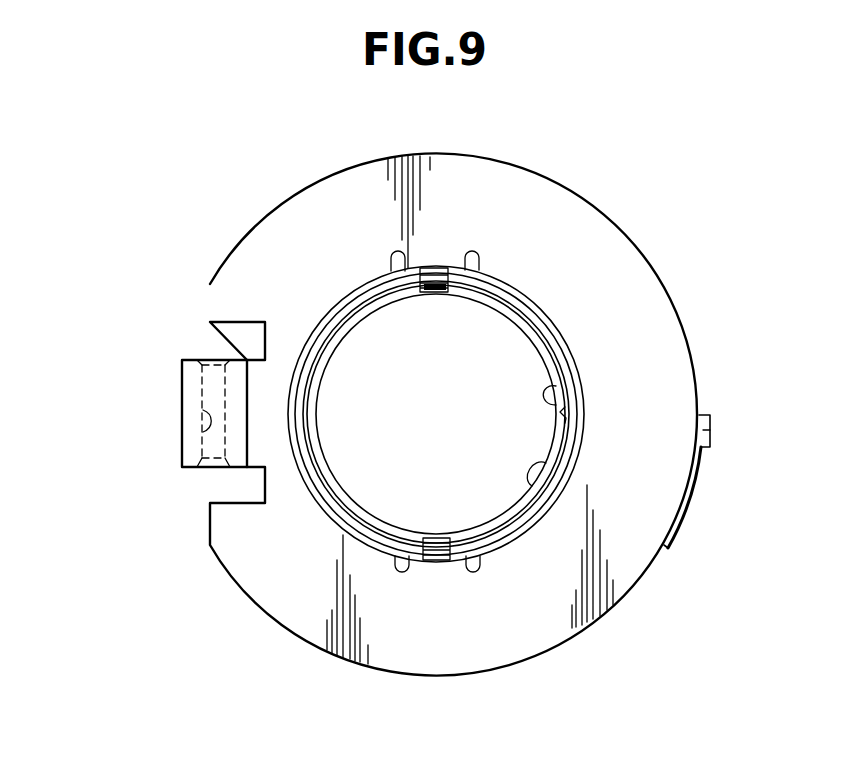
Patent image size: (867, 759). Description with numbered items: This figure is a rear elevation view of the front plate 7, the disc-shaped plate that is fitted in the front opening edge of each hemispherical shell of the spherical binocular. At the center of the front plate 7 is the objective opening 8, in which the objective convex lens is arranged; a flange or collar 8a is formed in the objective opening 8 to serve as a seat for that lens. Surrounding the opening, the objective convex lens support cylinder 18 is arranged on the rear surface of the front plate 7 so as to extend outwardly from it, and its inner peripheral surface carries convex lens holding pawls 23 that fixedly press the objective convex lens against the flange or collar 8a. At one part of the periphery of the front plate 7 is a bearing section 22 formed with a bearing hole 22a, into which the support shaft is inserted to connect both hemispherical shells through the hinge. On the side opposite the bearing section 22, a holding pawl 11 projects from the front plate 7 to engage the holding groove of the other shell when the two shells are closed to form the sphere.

The front plate 7 is at (533, 193).
The objective opening 8 is at (549, 391).
The flange or collar 8a is at (541, 468).
The holding pawl 11 is at (710, 431).
The objective convex lens support cylinder 18 is at (567, 357).
The bearing section 22 is at (183, 372).
The bearing hole 22a is at (204, 432).
The convex lens holding pawls 23 is at (438, 293).